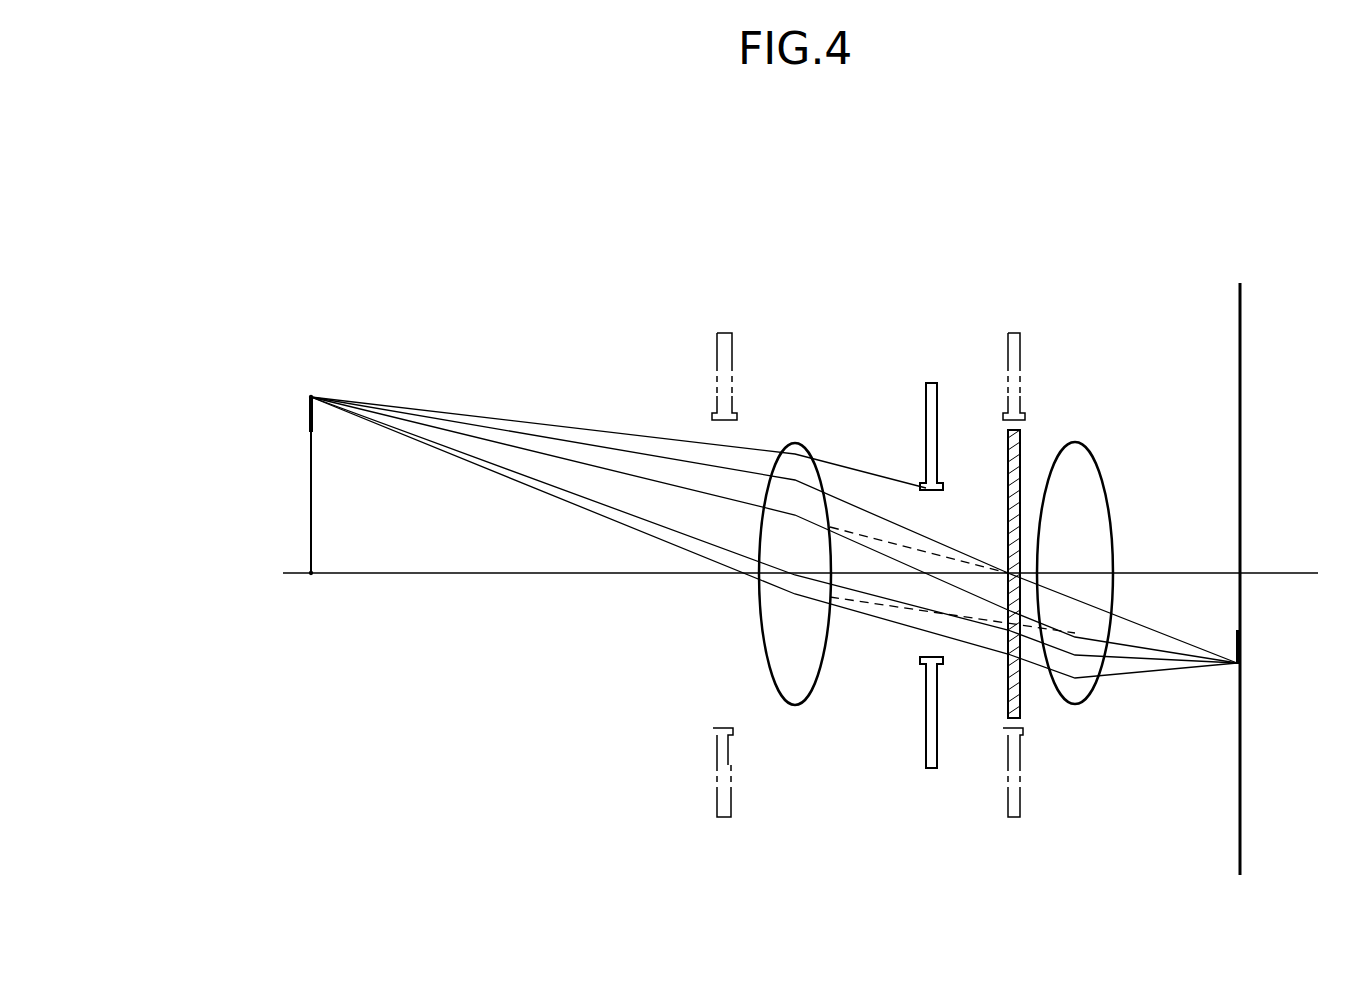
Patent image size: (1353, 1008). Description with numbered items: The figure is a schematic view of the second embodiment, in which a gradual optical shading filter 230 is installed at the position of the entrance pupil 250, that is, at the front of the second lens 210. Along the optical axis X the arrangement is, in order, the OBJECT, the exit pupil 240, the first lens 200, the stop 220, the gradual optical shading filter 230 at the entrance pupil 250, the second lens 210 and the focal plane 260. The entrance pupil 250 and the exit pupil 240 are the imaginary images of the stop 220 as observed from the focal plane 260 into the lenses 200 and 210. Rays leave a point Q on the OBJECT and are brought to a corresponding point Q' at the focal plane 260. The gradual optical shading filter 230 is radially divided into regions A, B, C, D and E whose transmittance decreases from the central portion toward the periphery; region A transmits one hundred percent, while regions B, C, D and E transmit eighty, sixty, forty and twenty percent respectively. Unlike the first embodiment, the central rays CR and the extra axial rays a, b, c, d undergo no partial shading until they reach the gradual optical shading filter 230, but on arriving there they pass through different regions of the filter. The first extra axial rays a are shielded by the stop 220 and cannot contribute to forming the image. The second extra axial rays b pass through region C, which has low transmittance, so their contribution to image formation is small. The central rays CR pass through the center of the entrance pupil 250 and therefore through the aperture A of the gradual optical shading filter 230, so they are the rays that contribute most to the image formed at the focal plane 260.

The first lens 200 is at (797, 705).
The second lens 210 is at (1083, 703).
The stop 220 is at (927, 383).
The gradual optical shading filter 230 is at (1003, 704).
The exit pupil 240 is at (733, 348).
The entrance pupil 250 is at (1022, 343).
The focal plane 260 is at (1243, 818).
The region A is at (1015, 555).
The region B is at (1017, 519).
The region C is at (1017, 490).
The region D is at (1017, 463).
The region E is at (1021, 432).
The first extra axial rays a is at (657, 437).
The second extra axial rays b is at (595, 515).
The extra axial rays c is at (625, 512).
The extra axial rays d is at (600, 446).
The central rays CR is at (498, 442).
The object point Q is at (302, 380).
The image point Q' is at (1259, 654).
The optical axis X is at (338, 573).
The object OBJECT is at (311, 498).